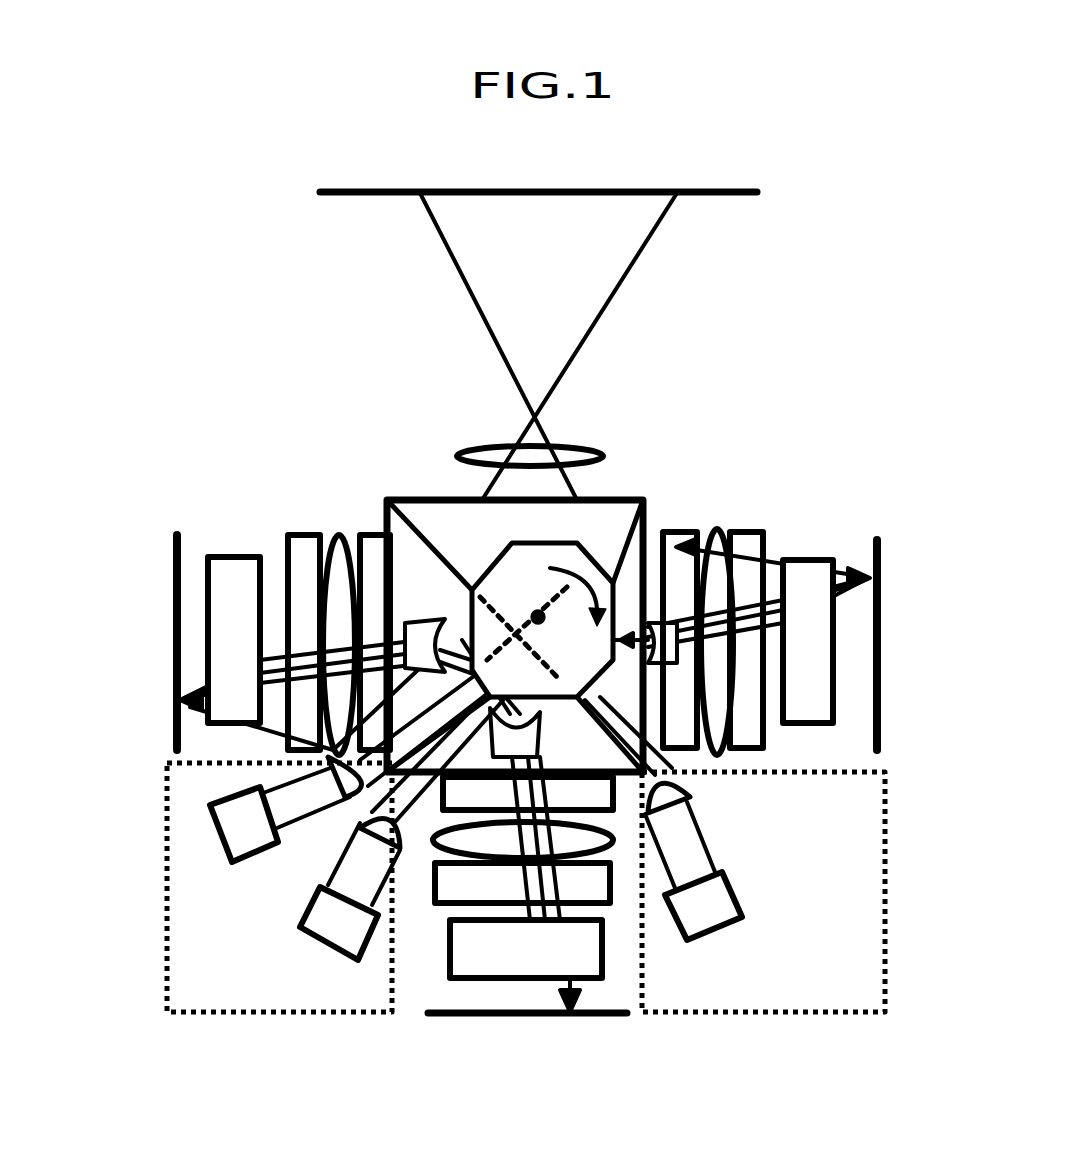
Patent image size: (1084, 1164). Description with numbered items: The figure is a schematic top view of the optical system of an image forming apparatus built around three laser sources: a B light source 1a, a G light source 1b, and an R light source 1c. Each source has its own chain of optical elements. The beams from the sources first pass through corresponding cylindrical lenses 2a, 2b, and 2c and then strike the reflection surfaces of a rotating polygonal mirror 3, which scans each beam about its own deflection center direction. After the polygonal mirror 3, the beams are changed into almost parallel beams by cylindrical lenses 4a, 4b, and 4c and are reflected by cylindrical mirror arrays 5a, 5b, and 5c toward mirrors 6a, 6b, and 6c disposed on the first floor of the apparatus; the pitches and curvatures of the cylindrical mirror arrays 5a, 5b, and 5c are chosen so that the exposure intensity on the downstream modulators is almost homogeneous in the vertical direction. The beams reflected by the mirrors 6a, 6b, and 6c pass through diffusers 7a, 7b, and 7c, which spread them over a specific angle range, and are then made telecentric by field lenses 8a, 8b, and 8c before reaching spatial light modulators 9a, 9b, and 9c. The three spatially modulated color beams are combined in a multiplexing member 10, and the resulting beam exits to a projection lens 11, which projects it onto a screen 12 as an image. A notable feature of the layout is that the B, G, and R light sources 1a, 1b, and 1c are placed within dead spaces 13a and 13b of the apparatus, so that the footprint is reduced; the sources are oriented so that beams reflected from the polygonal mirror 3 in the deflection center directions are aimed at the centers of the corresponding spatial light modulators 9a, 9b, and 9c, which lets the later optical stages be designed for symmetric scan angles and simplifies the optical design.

The B light source 1a is at (325, 922).
The G light source 1b is at (230, 822).
The R light source 1c is at (720, 898).
The cylindrical lens 2a is at (357, 830).
The cylindrical lens 2b is at (325, 773).
The cylindrical lens 2c is at (690, 793).
The polygonal mirror 3 is at (575, 555).
The cylindrical lens 4a is at (425, 622).
The cylindrical lens 4b is at (522, 745).
The cylindrical lens 4c is at (660, 648).
The cylindrical mirror array 5a is at (232, 557).
The cylindrical mirror array 5b is at (472, 935).
The cylindrical mirror array 5c is at (813, 560).
The mirror 6a is at (175, 565).
The mirror 6b is at (497, 1015).
The mirror 6c is at (880, 550).
The diffuser 7a is at (303, 543).
The diffuser 7b is at (458, 885).
The diffuser 7c is at (758, 532).
The field lens 8a is at (336, 540).
The field lens 8b is at (588, 845).
The field lens 8c is at (716, 535).
The spatial light modulator 9a is at (375, 535).
The spatial light modulator 9b is at (588, 792).
The spatial light modulator 9c is at (673, 532).
The multiplexing member 10 is at (427, 523).
The projection lens 11 is at (562, 443).
The screen 12 is at (727, 193).
The dead space 13a is at (202, 1013).
The dead space 13b is at (818, 1013).